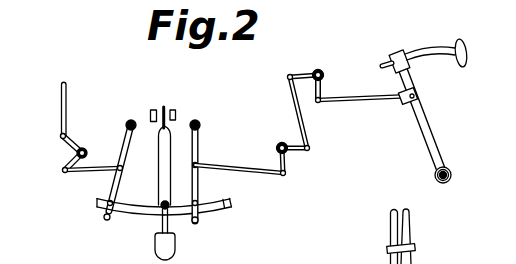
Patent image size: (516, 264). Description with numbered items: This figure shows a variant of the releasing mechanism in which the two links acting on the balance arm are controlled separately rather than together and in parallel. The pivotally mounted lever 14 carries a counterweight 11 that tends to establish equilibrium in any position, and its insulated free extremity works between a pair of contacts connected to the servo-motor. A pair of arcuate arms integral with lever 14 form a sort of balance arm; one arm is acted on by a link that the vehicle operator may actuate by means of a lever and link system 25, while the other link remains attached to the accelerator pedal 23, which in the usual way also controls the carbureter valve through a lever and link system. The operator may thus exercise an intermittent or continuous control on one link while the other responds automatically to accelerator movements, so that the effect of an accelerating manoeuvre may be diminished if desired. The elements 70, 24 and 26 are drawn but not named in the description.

The lever and link system 25 is at (61, 96).
The lever 14 is at (164, 182).
The pivot ball 70 is at (158, 212).
The counterweight 11 is at (169, 249).
The connecting bar 24 is at (246, 169).
The accelerator pedal 23 is at (425, 128).
The tool member 26 is at (432, 236).